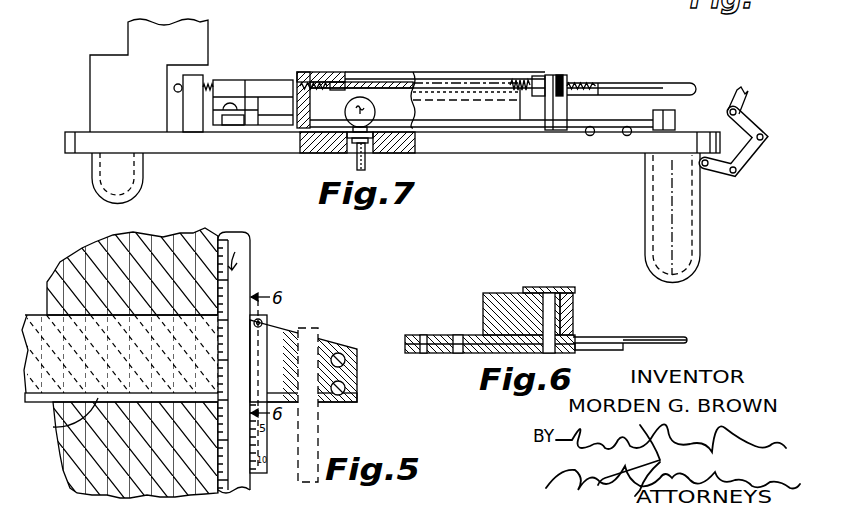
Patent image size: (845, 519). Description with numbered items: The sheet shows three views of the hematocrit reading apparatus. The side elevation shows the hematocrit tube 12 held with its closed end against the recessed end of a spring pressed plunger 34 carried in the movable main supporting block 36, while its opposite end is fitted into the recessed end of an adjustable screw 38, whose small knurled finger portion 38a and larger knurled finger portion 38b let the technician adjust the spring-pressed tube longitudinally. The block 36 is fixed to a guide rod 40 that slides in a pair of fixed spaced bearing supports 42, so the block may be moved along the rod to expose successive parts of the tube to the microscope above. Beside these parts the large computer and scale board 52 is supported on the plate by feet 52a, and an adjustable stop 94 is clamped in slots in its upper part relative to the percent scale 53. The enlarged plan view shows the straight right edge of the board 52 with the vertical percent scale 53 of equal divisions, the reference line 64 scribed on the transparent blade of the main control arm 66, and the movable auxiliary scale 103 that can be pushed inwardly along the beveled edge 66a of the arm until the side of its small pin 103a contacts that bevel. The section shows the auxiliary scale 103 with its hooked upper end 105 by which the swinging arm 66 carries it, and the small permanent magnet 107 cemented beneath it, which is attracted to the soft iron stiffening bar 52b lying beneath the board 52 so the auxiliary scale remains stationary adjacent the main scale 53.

In FIG. 7, the hematocrit tube 12 is at (380, 80).
In FIG. 7, the spring pressed plunger 34 is at (340, 81).
In FIG. 7, the movable main supporting block 36 is at (314, 73).
In FIG. 7, the adjustable screw 38 is at (513, 78).
In FIG. 7, the small knurled finger portion 38a is at (600, 83).
In FIG. 7, the larger knurled finger portion 38b is at (560, 74).
In FIG. 7, the guide rod 40 is at (672, 84).
In FIG. 7, the bearing supports 42 is at (182, 106).
In FIG. 5, the computer and scale board 52 is at (72, 258).
In FIG. 6, the computer and scale board 52 is at (671, 336).
In FIG. 7, the feet 52a is at (628, 136).
In FIG. 6, the soft iron stiffening bar 52b is at (602, 346).
In FIG. 5, the percent scale 53 is at (249, 238).
In FIG. 5, the reference line 64 is at (53, 427).
In FIG. 6, the main control arm 66 is at (492, 308).
In FIG. 5, the beveled edge 66a is at (283, 334).
In FIG. 7, the adjustable stop 94 is at (676, 116).
In FIG. 5, the auxiliary scale 103 is at (268, 438).
In FIG. 6, the auxiliary scale 103 is at (437, 336).
In FIG. 6, the small pin 103a is at (574, 309).
In FIG. 6, the hooked upper end 105 is at (546, 287).
In FIG. 6, the permanent magnet 107 is at (476, 352).